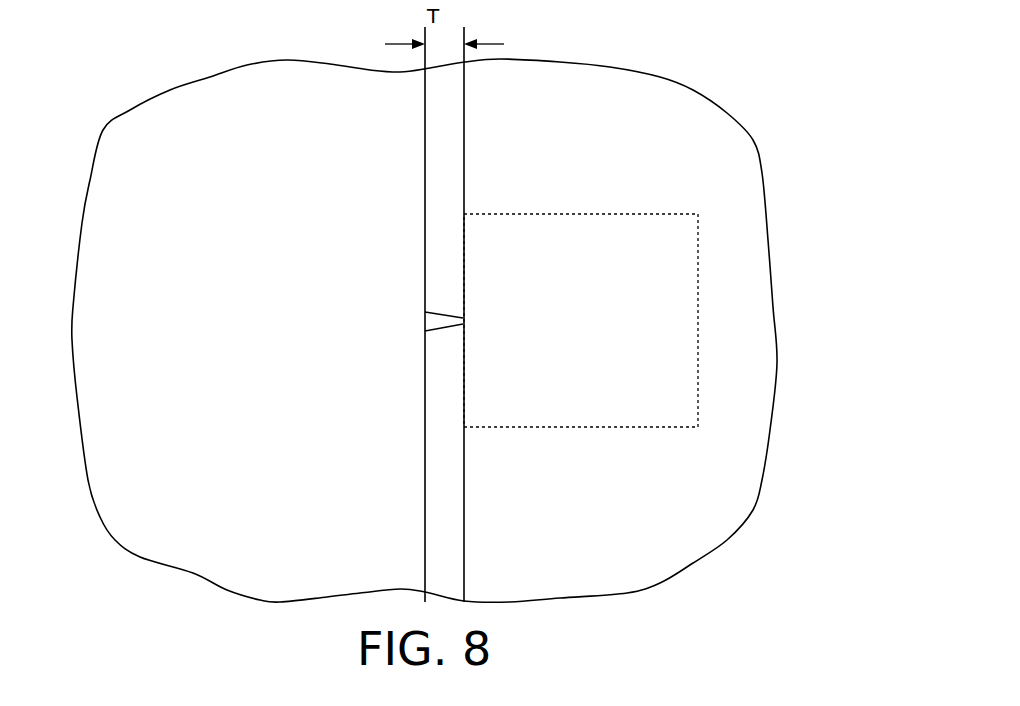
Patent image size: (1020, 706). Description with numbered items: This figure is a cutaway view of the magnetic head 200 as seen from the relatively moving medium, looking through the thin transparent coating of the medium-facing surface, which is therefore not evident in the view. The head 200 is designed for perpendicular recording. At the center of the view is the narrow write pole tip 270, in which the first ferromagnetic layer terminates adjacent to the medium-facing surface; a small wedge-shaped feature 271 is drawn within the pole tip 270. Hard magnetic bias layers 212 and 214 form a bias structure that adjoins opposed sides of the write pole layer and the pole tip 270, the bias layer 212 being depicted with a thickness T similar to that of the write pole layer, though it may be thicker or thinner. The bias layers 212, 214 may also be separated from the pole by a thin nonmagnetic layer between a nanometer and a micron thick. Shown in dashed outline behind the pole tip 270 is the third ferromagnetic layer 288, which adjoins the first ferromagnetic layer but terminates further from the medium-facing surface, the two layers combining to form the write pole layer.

The magnetic head 200 is at (784, 150).
The hard magnetic bias layer 212 is at (425, 218).
The hard magnetic bias layer 214 is at (425, 430).
The first pole tip 270 is at (464, 318).
The defect / pinhole 271 is at (413, 321).
The third ferromagnetic layer 288 is at (699, 410).